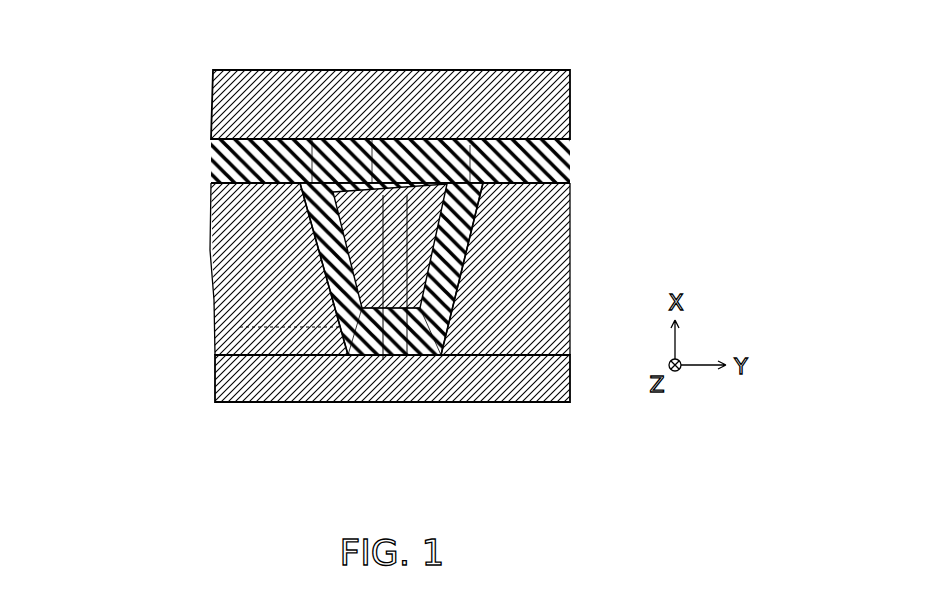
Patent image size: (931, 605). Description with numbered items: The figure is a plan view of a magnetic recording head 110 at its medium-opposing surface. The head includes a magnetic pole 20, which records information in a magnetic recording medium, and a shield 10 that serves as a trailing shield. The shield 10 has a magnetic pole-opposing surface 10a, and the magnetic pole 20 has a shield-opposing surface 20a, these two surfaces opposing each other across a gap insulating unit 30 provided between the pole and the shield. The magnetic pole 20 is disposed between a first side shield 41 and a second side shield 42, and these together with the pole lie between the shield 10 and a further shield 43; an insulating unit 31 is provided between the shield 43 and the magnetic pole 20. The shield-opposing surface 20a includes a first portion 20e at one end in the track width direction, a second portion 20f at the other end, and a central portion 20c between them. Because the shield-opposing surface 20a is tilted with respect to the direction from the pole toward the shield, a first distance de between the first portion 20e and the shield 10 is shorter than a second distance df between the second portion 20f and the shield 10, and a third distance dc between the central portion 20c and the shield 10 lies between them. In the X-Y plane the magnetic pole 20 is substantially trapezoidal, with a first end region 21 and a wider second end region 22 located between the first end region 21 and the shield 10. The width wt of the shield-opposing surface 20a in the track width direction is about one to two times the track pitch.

The shield 10 is at (212, 105).
The magnetic pole-opposing surface 10a is at (316, 140).
The magnetic pole 20 is at (212, 222).
The shield-opposing surface 20a is at (335, 182).
The central portion 20c is at (405, 357).
The first portion 20e is at (480, 200).
The second portion 20f is at (305, 178).
The first end region 21 is at (450, 358).
The second end region 22 is at (418, 195).
The gap insulating unit 30 is at (212, 146).
The insulating unit 31 is at (216, 335).
The first side shield 41 is at (210, 252).
The second side shield 42 is at (571, 272).
The shield 43 is at (216, 382).
The magnetic recording head 110 is at (695, 84).
The third distance dc is at (368, 185).
The first distance de is at (470, 151).
The second distance df is at (318, 192).
The width wt is at (383, 356).